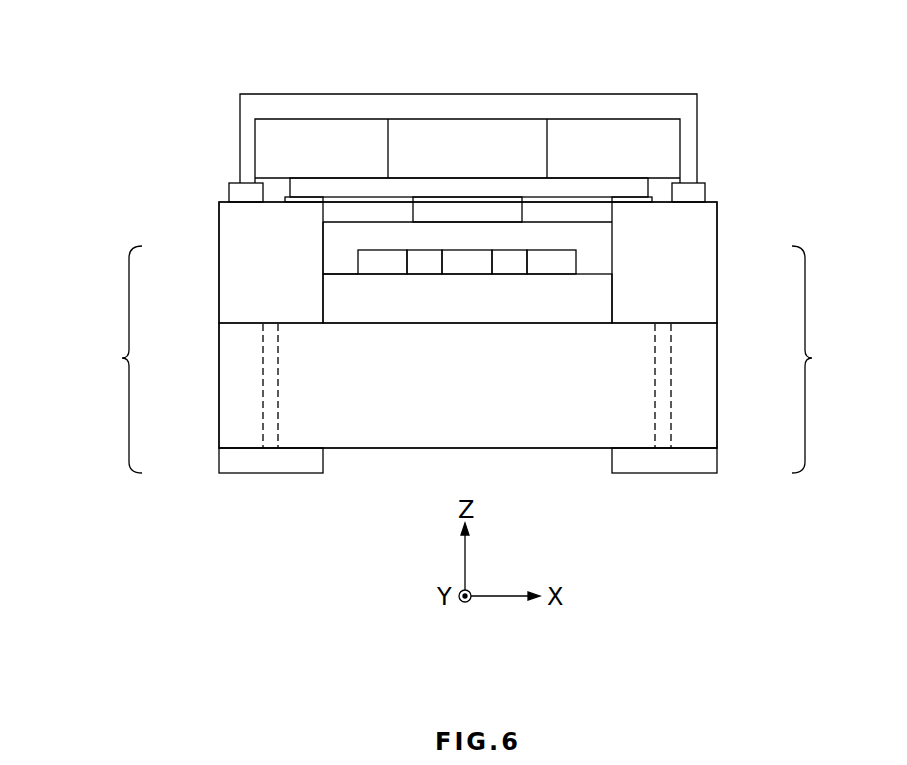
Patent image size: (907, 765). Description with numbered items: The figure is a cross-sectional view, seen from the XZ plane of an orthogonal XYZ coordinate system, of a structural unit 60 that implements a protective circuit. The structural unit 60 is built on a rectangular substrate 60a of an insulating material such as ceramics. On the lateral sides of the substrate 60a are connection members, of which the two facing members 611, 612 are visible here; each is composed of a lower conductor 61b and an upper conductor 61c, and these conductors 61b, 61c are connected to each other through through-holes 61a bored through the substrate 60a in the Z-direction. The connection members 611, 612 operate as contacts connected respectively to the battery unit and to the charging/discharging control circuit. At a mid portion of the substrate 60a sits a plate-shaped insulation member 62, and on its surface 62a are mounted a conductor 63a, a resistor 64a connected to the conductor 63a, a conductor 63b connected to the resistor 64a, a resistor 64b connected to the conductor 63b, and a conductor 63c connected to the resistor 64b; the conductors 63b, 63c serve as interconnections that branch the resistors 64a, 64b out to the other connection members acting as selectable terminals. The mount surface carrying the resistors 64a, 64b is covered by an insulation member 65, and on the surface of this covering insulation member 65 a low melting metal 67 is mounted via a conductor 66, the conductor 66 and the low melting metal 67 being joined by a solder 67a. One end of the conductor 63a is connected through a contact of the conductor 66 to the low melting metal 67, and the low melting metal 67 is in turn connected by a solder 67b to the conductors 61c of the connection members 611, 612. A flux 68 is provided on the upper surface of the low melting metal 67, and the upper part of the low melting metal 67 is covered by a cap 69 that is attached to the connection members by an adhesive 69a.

The structural unit 60 is at (487, 23).
The substrate 60a is at (218, 414).
The through-holes 61a is at (263, 363).
The conductor 61b is at (220, 457).
The conductor 61c is at (237, 260).
The connection member 611 is at (833, 359).
The connection member 612 is at (105, 359).
The plate-shaped insulation member 62 is at (595, 303).
The surface 62a is at (317, 264).
The conductor 63a is at (553, 263).
The conductor 63b is at (467, 260).
The conductor 63c is at (382, 260).
The resistor 64a is at (510, 263).
The resistor 64b is at (427, 267).
The insulation member 65 is at (363, 235).
The conductor 66 is at (435, 213).
The low melting metal 67 is at (583, 190).
The solder 67a is at (490, 200).
The solder 67b is at (285, 197).
The flux 68 is at (528, 137).
The cap 69 is at (488, 108).
The adhesive 69a is at (233, 190).